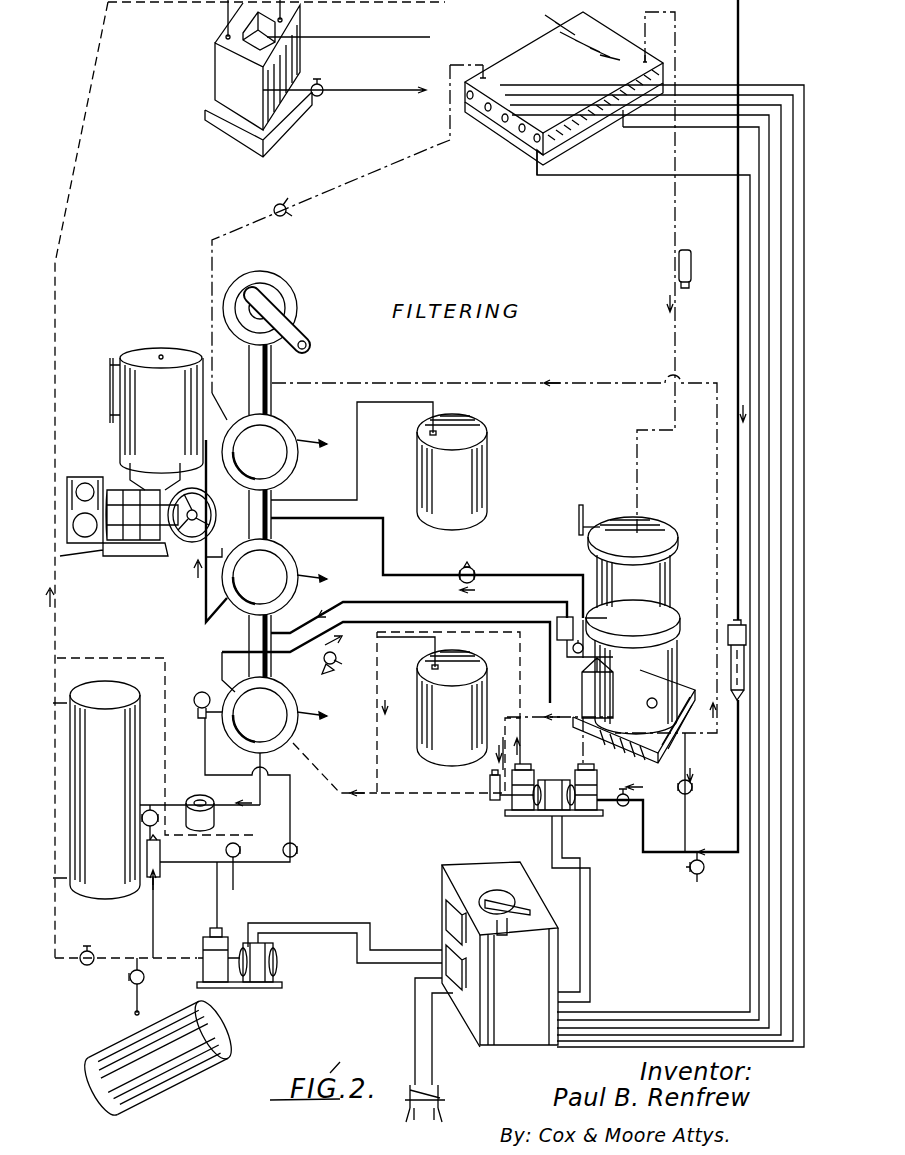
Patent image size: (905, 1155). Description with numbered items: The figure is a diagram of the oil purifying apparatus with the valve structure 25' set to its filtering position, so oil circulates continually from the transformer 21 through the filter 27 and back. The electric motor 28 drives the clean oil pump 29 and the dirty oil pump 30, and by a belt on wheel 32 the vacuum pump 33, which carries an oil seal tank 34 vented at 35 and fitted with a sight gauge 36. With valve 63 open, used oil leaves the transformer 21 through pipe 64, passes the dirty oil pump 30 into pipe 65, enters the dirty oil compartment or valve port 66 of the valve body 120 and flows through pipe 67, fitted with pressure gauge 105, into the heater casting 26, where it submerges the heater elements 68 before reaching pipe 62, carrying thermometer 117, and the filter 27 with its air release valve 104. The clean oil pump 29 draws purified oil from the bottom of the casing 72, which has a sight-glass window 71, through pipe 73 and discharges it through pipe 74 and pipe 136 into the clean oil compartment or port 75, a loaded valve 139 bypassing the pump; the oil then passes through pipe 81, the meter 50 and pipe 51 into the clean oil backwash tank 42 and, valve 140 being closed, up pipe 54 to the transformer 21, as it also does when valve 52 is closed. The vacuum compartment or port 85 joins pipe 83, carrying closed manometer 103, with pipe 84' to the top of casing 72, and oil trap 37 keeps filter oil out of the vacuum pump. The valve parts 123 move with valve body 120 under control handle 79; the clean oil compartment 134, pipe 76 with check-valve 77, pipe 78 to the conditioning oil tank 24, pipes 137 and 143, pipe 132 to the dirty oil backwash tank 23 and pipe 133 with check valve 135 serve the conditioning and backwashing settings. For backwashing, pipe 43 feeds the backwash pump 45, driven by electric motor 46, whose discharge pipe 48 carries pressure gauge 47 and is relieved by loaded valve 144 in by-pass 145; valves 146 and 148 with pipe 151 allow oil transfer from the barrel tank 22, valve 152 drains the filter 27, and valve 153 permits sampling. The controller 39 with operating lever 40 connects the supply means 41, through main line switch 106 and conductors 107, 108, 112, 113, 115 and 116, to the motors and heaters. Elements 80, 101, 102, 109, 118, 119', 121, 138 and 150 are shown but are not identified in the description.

The transformer 21 is at (214, 78).
The barrel tank 22 is at (158, 1058).
The dirty oil backwash tank 23 is at (453, 487).
The conditioning oil tank 24 is at (446, 721).
The valve structure 25' is at (272, 292).
The heater casting 26 is at (540, 42).
The filter 27 is at (634, 640).
The electric motor 28 is at (548, 780).
The clean oil pump 29 is at (524, 770).
The dirty oil pump 30 is at (595, 778).
The wheel 32 is at (200, 560).
The vacuum pump 33 is at (118, 430).
The oil seal tank 34 is at (161, 419).
The vent 35 is at (163, 355).
The sight gauge 36 is at (110, 398).
The oil trap 37 is at (556, 625).
The controller 39 is at (505, 963).
The operating lever 40 is at (535, 905).
The supply means 41 is at (424, 1125).
The clean oil backwash tank 42 is at (105, 790).
The pipe 43 is at (57, 917).
The backwash pump 45 is at (226, 935).
The electric motor 46 is at (275, 951).
The pressure gauge 47 is at (202, 692).
The pipe 48 is at (217, 917).
The meter 50 is at (225, 810).
The pipe 51 is at (170, 800).
The valve 52 is at (162, 840).
The pipe 54 is at (57, 372).
The pipe 62 is at (672, 248).
The valve 63 is at (322, 96).
The pipe 64 is at (395, 88).
The pipe 65 is at (352, 382).
The valve port 66 is at (285, 435).
The pipe 67 is at (362, 175).
The heater elements 68 is at (523, 132).
The sight-glass window 71 is at (647, 704).
The casing 72 is at (611, 669).
The pipe 73 is at (505, 712).
The pipe 74 is at (380, 680).
The port 75 is at (290, 730).
The pipe 76 is at (332, 676).
The check-valve 77 is at (340, 668).
The pipe 78 is at (407, 653).
The control handle 79 is at (302, 342).
The pipe 80 is at (355, 605).
The pipe 81 is at (258, 795).
The pipe 83 is at (232, 596).
The pipe 84' is at (567, 669).
The port 85 is at (240, 604).
The valve 101 is at (697, 793).
The pipe 102 is at (690, 826).
The closed manometer 103 is at (218, 552).
The air release valve 104 is at (580, 520).
The pressure gauge 105 is at (266, 206).
The main line switch 106 is at (418, 1100).
The conductor 107 is at (345, 920).
The conductor 108 is at (432, 1050).
The valve 109 is at (292, 845).
The conductor 112 is at (357, 968).
The conductor 113 is at (548, 863).
The conductor 115 is at (610, 178).
The conductors 116 is at (660, 100).
The thermometer 117 is at (693, 250).
The compartment wall 118 is at (277, 420).
The outlet 119' is at (327, 567).
The valve body 120 is at (288, 462).
The pipe 121 is at (275, 370).
The valve parts 123 is at (278, 293).
The pipe 132 is at (303, 500).
The pipe 133 is at (338, 518).
The recess 134 is at (275, 680).
The check valve 135 is at (480, 570).
The pipe 136 is at (322, 765).
The pipe 137 is at (205, 748).
The pipe 138 is at (220, 657).
The loaded valve 139 is at (484, 812).
The valve 140 is at (92, 953).
The pipe 143 is at (510, 606).
The loaded valve 144 is at (163, 868).
The by-pass 145 is at (160, 902).
The valve 146 is at (242, 855).
The valve 148 is at (147, 975).
The trap 150 is at (728, 670).
The pipe 151 is at (165, 755).
The valve 152 is at (570, 648).
The valve 153 is at (700, 875).